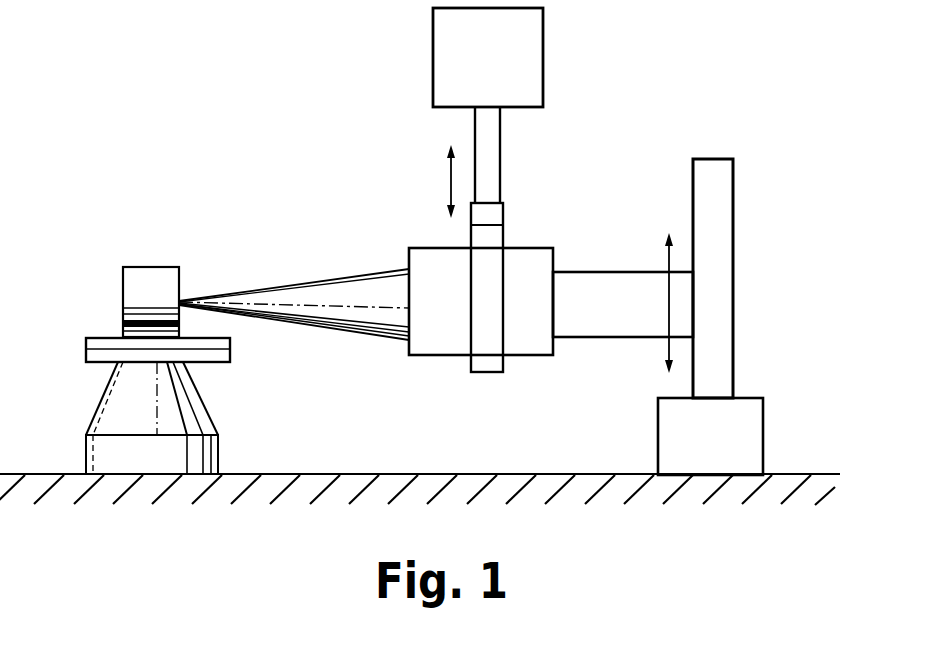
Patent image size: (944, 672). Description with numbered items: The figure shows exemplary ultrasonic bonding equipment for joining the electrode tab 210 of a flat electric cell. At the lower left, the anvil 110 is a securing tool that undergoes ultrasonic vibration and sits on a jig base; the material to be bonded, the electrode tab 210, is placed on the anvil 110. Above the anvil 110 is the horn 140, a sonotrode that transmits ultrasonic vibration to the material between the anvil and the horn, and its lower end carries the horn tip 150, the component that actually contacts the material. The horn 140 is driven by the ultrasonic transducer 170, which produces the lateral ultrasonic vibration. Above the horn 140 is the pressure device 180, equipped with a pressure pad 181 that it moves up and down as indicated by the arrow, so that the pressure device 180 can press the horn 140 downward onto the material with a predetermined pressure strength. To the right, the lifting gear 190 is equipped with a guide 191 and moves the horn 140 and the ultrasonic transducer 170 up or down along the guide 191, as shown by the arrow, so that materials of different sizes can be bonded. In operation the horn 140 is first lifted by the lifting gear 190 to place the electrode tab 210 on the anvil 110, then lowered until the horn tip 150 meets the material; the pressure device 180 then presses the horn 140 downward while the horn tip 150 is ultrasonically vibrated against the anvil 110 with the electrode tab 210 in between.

The anvil 110 is at (188, 401).
The electrode tab 210 is at (107, 362).
The horn tip 150 is at (122, 333).
The horn 140 is at (300, 261).
The pressure device 180 is at (570, 42).
The pressure pad 181 is at (497, 217).
The ultrasonic transducer 170 is at (619, 257).
The guide 191 is at (718, 190).
The lifting gear 190 is at (822, 157).